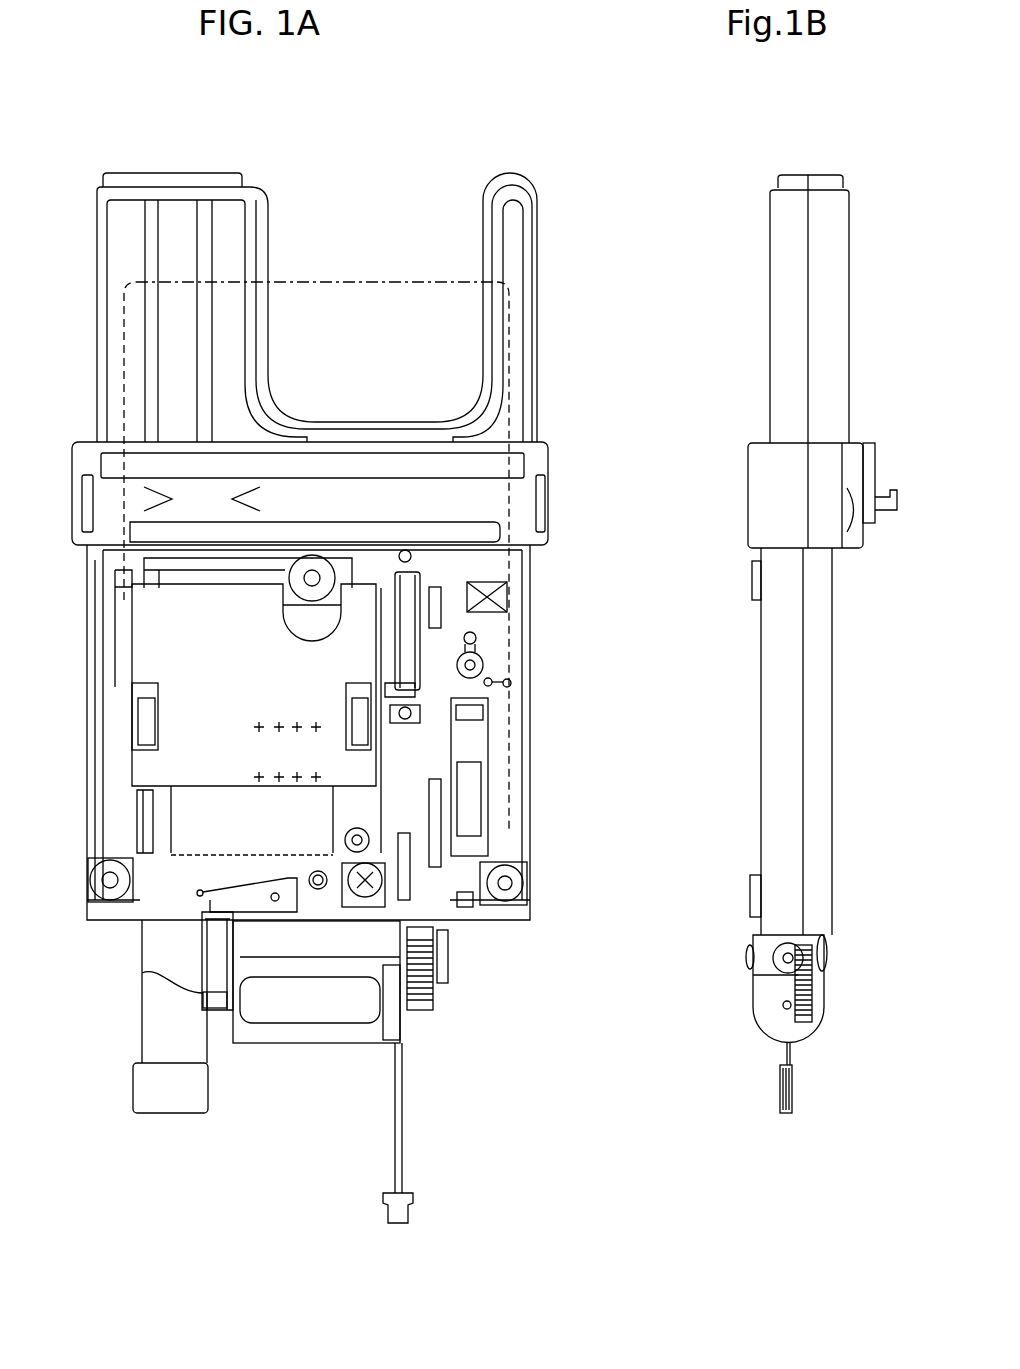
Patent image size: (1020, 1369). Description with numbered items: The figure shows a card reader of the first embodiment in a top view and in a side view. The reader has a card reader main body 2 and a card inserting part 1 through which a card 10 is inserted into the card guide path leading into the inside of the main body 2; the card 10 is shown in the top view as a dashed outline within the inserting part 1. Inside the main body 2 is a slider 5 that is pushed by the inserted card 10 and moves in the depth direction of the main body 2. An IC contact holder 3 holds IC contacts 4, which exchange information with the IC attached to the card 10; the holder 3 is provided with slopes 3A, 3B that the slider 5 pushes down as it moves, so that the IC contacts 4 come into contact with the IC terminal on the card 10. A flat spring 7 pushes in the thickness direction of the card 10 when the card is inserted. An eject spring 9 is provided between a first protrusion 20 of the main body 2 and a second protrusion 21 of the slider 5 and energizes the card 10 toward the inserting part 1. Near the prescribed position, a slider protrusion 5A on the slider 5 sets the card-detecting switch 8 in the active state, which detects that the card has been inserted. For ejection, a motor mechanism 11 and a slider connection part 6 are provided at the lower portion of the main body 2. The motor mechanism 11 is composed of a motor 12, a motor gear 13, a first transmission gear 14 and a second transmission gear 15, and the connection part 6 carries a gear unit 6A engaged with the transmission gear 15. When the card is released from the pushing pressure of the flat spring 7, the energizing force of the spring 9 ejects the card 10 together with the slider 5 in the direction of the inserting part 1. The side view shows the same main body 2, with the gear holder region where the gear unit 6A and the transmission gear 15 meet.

In FIG. 1A, the card inserting part 1 is at (265, 187).
In FIG. 1A, the card 10 is at (416, 281).
In FIG. 1A, the card reader main body 2 is at (531, 627).
In FIG. 1B, the card reader main body 2 is at (775, 653).
In FIG. 1A, the slider 5 is at (198, 650).
In FIG. 1A, the IC contact 4 is at (247, 775).
In FIG. 1A, the IC contact holder 3 is at (197, 812).
In FIG. 1A, the slope 3A is at (127, 790).
In FIG. 1A, the slope 3B is at (333, 792).
In FIG. 1A, the first protrusion 20 is at (411, 552).
In FIG. 1A, the eject spring 9 is at (405, 642).
In FIG. 1A, the second protrusion 21 is at (415, 710).
In FIG. 1A, the flat spring 7 is at (469, 829).
In FIG. 1A, the slider connection part 6 is at (420, 890).
In FIG. 1A, the slider protrusion 5A is at (388, 880).
In FIG. 1A, the first transmission gear 14 is at (217, 933).
In FIG. 1A, the motor gear 13 is at (205, 1002).
In FIG. 1A, the motor 12 is at (305, 1013).
In FIG. 1A, the motor mechanism 11 is at (233, 1043).
In FIG. 1A, the card-detecting switch 8 is at (388, 885).
In FIG. 1A, the second transmission gear 15 is at (428, 957).
In FIG. 1B, the second transmission gear 15 is at (777, 953).
In FIG. 1A, the gear unit 6A is at (428, 1013).
In FIG. 1B, the gear unit 6A is at (795, 992).